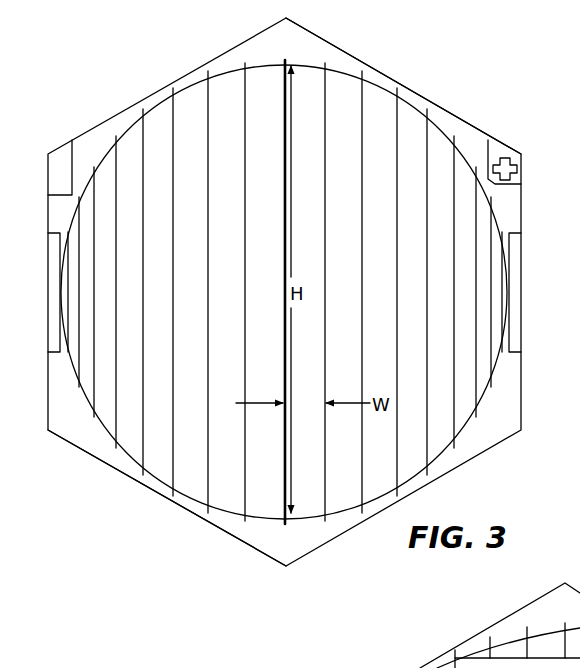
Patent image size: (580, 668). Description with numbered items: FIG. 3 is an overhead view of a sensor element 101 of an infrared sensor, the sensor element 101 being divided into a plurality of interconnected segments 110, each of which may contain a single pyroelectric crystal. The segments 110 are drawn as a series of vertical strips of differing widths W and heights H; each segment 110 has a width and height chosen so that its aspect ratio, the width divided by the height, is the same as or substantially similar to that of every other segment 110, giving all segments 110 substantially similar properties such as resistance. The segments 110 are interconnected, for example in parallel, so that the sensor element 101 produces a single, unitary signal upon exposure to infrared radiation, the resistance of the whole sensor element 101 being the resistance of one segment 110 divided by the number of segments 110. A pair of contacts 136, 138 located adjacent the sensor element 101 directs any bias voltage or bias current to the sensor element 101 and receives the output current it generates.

The sensor element 101 is at (467, 142).
The segments 110 is at (128, 139).
The contact 136 is at (281, 37).
The contact 138 is at (287, 547).